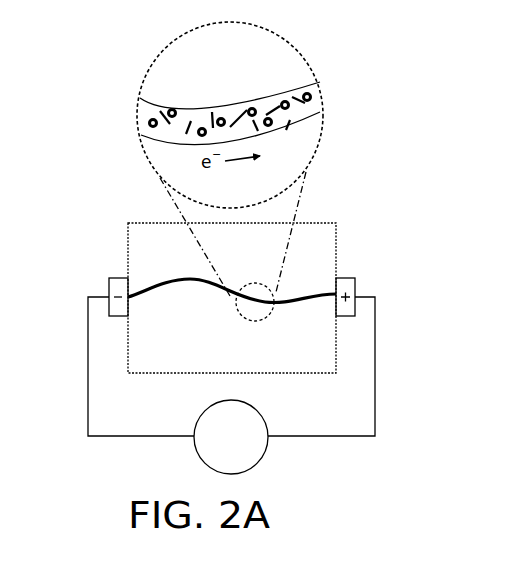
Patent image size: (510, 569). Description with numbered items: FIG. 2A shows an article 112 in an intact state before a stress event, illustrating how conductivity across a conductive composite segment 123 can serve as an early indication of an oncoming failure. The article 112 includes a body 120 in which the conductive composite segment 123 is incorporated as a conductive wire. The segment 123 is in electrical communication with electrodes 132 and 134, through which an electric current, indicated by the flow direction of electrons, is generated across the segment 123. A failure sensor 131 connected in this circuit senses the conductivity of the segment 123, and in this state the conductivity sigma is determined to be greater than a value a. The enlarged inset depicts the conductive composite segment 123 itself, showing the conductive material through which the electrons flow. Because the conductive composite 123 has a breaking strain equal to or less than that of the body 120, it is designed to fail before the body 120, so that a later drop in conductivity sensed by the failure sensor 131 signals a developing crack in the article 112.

The article 112 is at (172, 384).
The body 120 is at (153, 222).
The conductive composite segment 123 is at (201, 105).
The failure sensor 131 is at (258, 407).
The electrode 132 is at (117, 277).
The electrode 134 is at (345, 277).